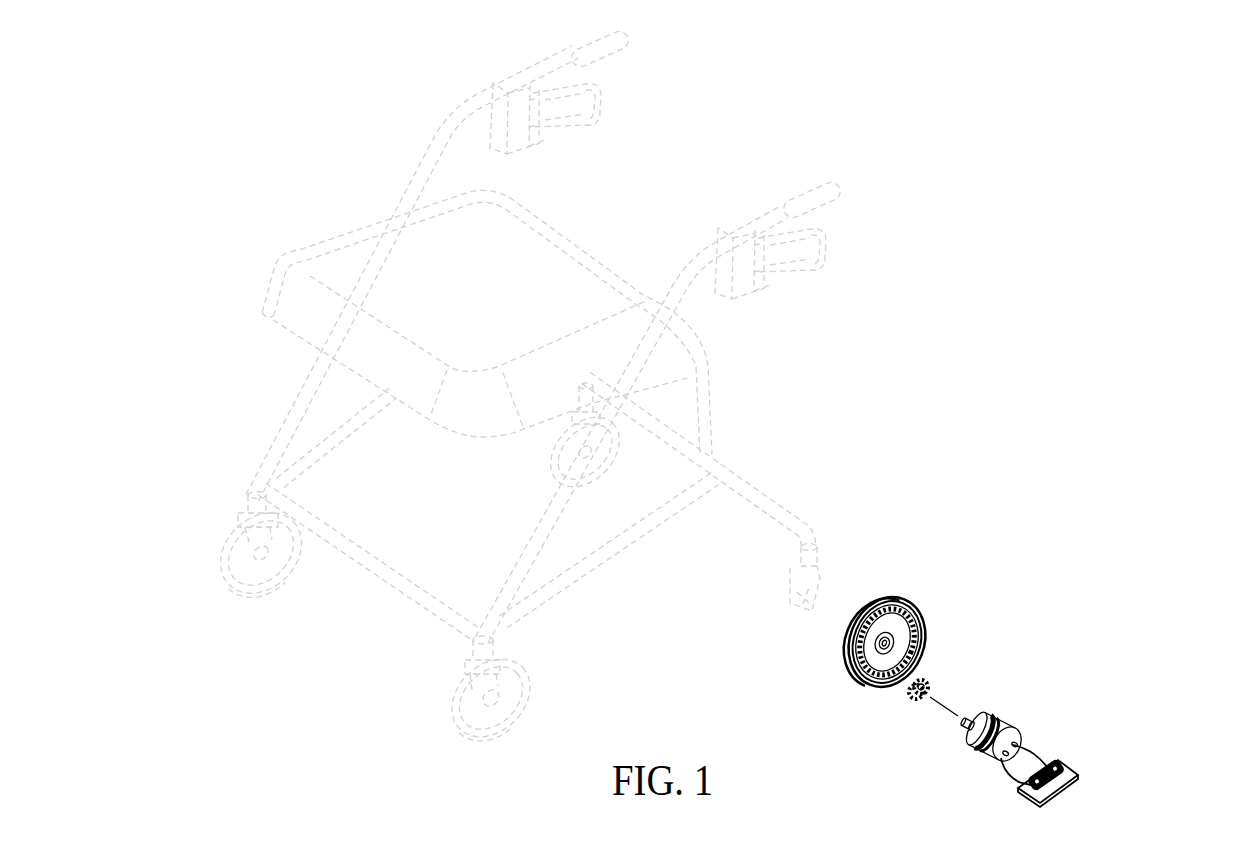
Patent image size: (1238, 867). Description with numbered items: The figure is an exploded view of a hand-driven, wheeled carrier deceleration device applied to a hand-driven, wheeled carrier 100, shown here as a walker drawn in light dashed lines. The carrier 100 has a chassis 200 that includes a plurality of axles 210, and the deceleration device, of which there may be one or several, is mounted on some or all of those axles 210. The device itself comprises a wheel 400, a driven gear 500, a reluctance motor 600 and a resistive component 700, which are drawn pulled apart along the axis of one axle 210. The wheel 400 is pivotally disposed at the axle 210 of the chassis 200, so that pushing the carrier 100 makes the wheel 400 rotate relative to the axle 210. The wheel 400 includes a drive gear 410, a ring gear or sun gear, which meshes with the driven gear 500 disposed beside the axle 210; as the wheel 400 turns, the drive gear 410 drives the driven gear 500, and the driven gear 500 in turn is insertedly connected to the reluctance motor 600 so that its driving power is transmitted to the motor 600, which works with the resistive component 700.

The hand-driven, wheeled carrier 100 is at (188, 75).
The chassis 200 is at (427, 95).
The axle 210 is at (833, 583).
The wheel 400 is at (925, 583).
The drive gear 410 is at (928, 631).
The driven gear 500 is at (948, 676).
The reluctance motor 600 is at (1024, 713).
The resistive component 700 is at (1083, 757).